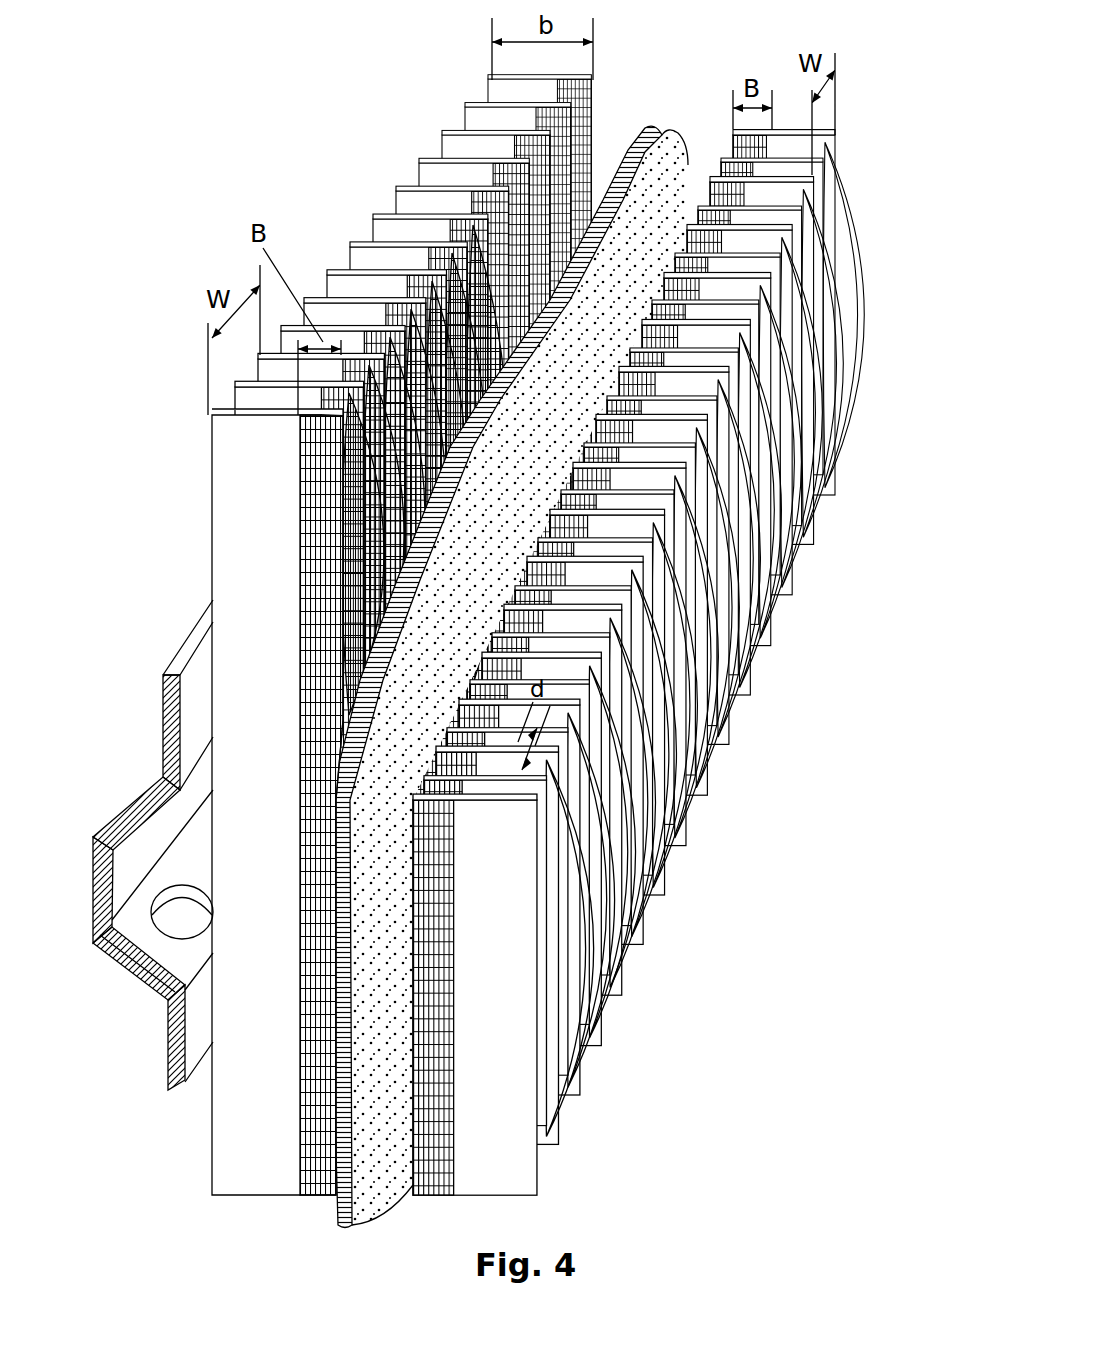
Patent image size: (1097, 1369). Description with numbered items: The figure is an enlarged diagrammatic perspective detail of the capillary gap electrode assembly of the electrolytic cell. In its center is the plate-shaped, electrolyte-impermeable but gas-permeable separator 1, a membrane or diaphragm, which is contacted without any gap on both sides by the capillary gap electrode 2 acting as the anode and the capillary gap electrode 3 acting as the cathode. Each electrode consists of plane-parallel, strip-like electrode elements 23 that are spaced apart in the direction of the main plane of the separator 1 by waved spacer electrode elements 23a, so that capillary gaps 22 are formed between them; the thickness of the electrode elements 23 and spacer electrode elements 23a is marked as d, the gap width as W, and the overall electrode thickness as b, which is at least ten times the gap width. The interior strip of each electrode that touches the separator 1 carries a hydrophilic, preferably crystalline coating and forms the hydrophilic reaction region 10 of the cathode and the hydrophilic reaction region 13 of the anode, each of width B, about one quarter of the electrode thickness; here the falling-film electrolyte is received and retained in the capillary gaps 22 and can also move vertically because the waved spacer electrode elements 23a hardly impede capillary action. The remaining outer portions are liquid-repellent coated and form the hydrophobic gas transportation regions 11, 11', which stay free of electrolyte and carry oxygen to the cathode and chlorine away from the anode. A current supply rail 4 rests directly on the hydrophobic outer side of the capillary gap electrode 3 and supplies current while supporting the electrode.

The separator 1 is at (658, 124).
The capillary gap electrode 2 is at (681, 637).
The capillary gap electrode 3 is at (365, 613).
The current supply rail 4 is at (152, 777).
The hydrophilic reaction region 10 is at (370, 245).
The hydrophobic gas transportation region 11 is at (348, 441).
The hydrophobic gas transportation region 11' is at (741, 653).
The hydrophilic reaction region 13 is at (665, 367).
The capillary gap 22 is at (827, 247).
The electrode element 23 is at (433, 185).
The waved spacer electrode element 23a is at (722, 677).